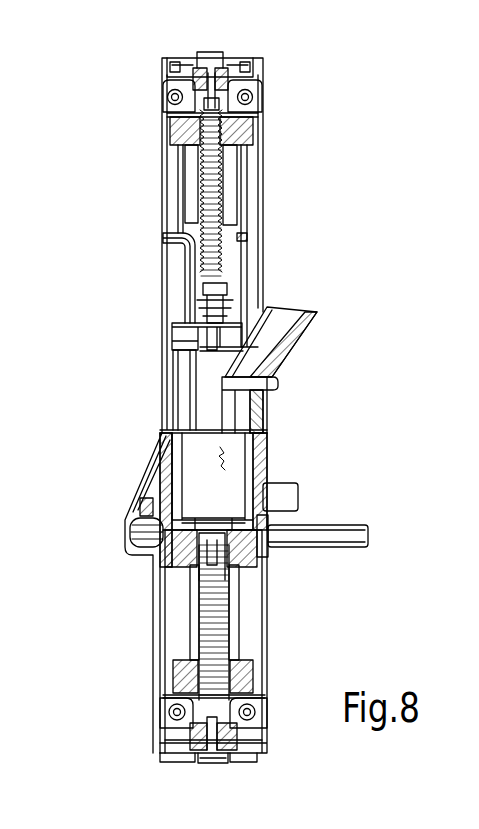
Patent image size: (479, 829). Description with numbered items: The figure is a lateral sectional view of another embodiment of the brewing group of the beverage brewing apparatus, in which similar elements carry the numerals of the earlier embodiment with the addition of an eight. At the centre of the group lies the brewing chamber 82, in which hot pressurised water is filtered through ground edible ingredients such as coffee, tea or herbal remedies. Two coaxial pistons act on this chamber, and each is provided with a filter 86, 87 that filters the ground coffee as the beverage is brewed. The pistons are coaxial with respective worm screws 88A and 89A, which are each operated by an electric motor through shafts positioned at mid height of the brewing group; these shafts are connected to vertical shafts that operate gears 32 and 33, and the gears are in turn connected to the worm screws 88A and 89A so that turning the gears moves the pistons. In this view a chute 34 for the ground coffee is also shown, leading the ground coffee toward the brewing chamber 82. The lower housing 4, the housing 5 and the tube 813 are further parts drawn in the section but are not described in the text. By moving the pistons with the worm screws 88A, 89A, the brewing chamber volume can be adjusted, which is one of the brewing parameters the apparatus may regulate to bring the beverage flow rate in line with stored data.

The lower housing 4 is at (262, 565).
The spindle drive housing 5 is at (262, 267).
The gear 32 is at (263, 92).
The gear 33 is at (262, 771).
The chute 34 is at (317, 310).
The brewing chamber 82 is at (347, 377).
The filter 86 is at (182, 374).
The filter 87 is at (230, 512).
The worm screw 88A is at (205, 192).
The worm screw 89A is at (213, 614).
The curved tube 813 is at (174, 250).